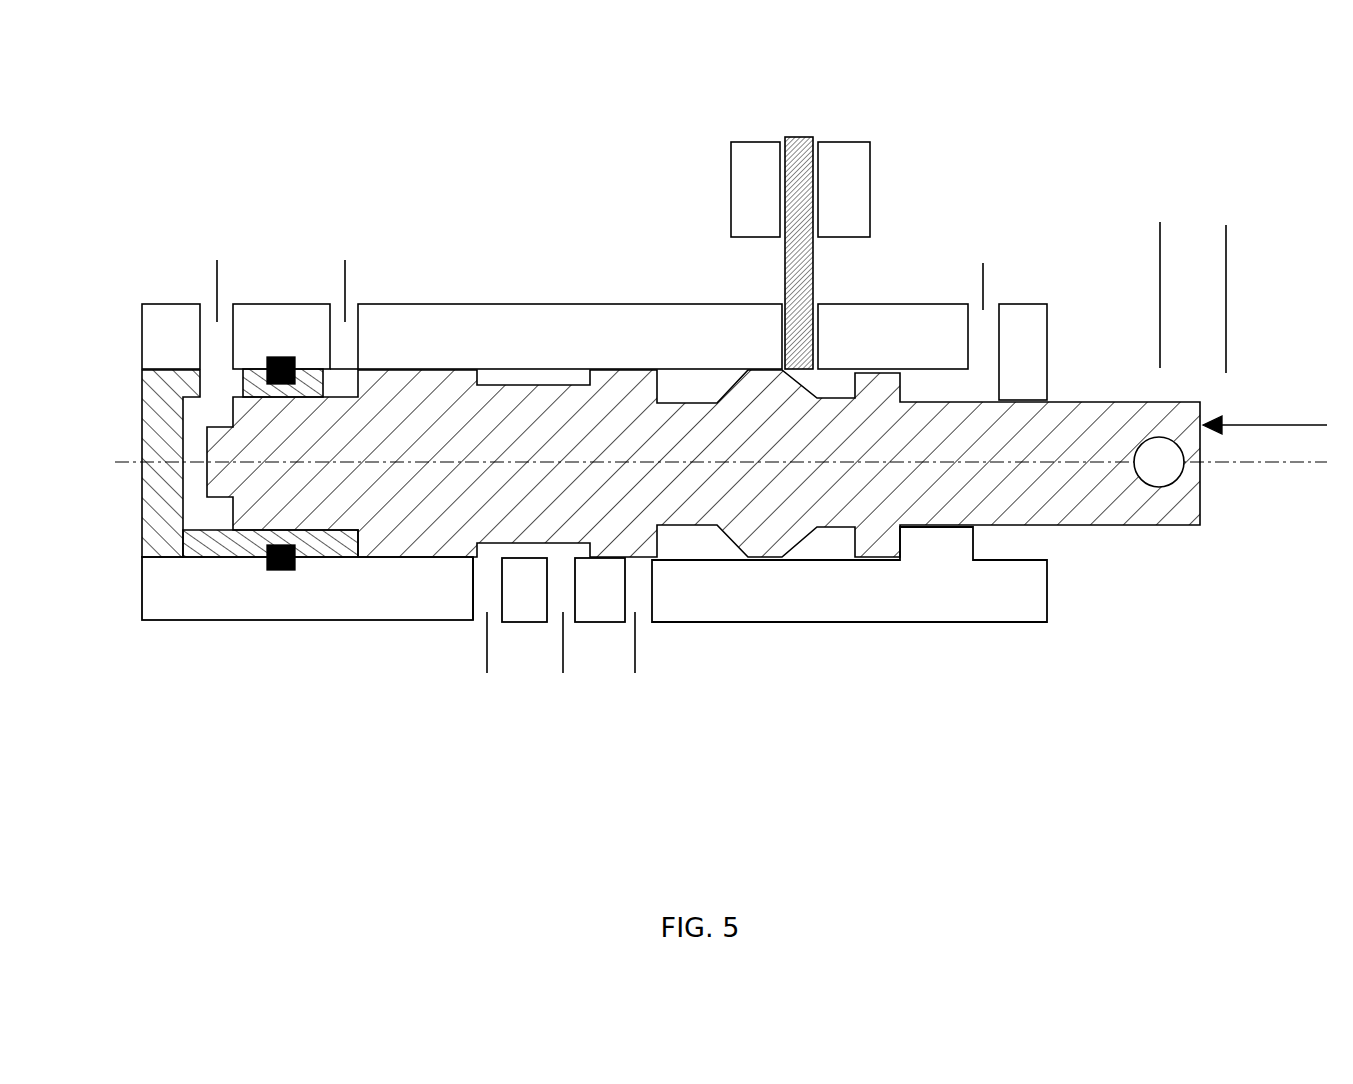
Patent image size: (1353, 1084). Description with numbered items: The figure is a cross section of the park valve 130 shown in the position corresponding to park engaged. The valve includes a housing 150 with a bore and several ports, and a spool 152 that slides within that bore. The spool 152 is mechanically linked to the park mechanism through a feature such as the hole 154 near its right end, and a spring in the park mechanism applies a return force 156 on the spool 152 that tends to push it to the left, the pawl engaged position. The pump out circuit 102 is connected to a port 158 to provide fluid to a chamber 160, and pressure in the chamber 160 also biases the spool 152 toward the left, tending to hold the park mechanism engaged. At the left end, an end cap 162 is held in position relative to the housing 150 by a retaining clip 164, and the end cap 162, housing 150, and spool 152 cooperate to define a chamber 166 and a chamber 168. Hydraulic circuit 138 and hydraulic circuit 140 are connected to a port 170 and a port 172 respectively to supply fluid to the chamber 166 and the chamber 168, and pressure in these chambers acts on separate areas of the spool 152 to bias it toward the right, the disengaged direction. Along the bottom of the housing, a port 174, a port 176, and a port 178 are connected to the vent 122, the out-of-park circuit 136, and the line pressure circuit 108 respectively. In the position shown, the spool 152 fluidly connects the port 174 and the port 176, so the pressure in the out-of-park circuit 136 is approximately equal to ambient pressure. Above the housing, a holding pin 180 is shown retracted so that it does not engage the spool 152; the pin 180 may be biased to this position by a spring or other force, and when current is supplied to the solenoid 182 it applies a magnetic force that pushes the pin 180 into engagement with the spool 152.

The park valve 130 is at (551, 92).
The housing 150 is at (612, 304).
The spool 152 is at (703, 463).
The hole 154 is at (1158, 490).
The return force 156 is at (1293, 427).
The port 158 is at (968, 307).
The chamber 160 is at (985, 372).
The end cap 162 is at (167, 410).
The retaining clip 164 is at (280, 572).
The chamber 166 is at (338, 387).
The chamber 168 is at (175, 538).
The port 170 is at (347, 350).
The port 172 is at (217, 350).
The port 174 is at (483, 587).
The port 176 is at (560, 595).
The port 178 is at (637, 594).
The holding pin 180 is at (785, 272).
The solenoid 182 is at (731, 175).
The pump out circuit 102 is at (983, 201).
The line pressure circuit 108 is at (639, 698).
The vent 122 is at (490, 708).
The out-of-park circuit 136 is at (566, 704).
The hydraulic circuit 138 is at (345, 215).
The hydraulic circuit 140 is at (217, 215).